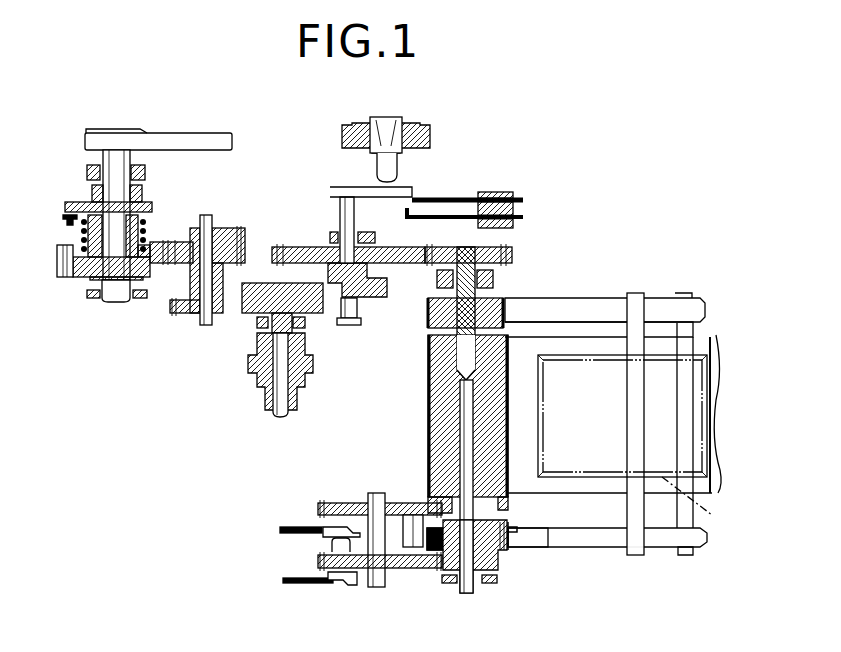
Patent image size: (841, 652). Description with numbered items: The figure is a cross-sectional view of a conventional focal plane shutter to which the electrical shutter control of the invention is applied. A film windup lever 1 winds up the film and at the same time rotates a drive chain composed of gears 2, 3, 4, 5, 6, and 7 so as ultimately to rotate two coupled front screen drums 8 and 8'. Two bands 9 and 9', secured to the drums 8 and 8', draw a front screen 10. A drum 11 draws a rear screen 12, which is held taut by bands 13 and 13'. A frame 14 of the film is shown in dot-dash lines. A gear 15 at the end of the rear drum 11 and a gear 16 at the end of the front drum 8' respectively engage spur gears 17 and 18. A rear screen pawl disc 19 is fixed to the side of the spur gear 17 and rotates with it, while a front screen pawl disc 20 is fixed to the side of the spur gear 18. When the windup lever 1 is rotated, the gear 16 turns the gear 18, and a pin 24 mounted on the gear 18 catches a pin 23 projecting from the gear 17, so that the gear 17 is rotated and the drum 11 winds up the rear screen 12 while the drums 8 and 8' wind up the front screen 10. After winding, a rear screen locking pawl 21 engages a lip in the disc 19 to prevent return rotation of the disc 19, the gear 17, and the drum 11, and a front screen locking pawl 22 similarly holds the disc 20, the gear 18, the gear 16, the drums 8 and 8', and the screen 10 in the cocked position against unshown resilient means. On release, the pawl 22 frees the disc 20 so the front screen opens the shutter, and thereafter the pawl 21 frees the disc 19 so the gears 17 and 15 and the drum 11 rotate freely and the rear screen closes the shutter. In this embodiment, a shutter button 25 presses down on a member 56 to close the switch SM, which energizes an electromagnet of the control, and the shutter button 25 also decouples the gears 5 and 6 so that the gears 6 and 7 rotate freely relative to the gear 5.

The film windup lever 1 is at (190, 138).
The gear 2 is at (152, 250).
The gear 3 is at (228, 242).
The gear 4 is at (253, 315).
The gear 5 is at (352, 298).
The gear 6 is at (300, 247).
The gear 7 is at (515, 250).
The front screen drum 8 is at (482, 313).
The front screen drum 8' is at (521, 555).
The band 9 is at (605, 302).
The band 9' is at (607, 559).
The front screen 10 is at (703, 340).
The drum 11 is at (428, 406).
The rear screen 12 is at (548, 322).
The band 13 is at (659, 409).
The band 13' is at (657, 569).
The frame of the film 14 is at (704, 428).
The gear 15 is at (530, 522).
The gear 16 is at (497, 572).
The spur gear 17 is at (352, 505).
The spur gear 18 is at (318, 560).
The rear screen pawl disc 19 is at (328, 527).
The front screen pawl disc 20 is at (353, 585).
The rear screen locking pawl 21 is at (283, 527).
The front screen locking pawl 22 is at (300, 585).
The pin 23 is at (412, 548).
The pin 24 is at (340, 525).
The shutter button 25 is at (403, 120).
The member 56 is at (406, 188).
The switch SM is at (470, 222).